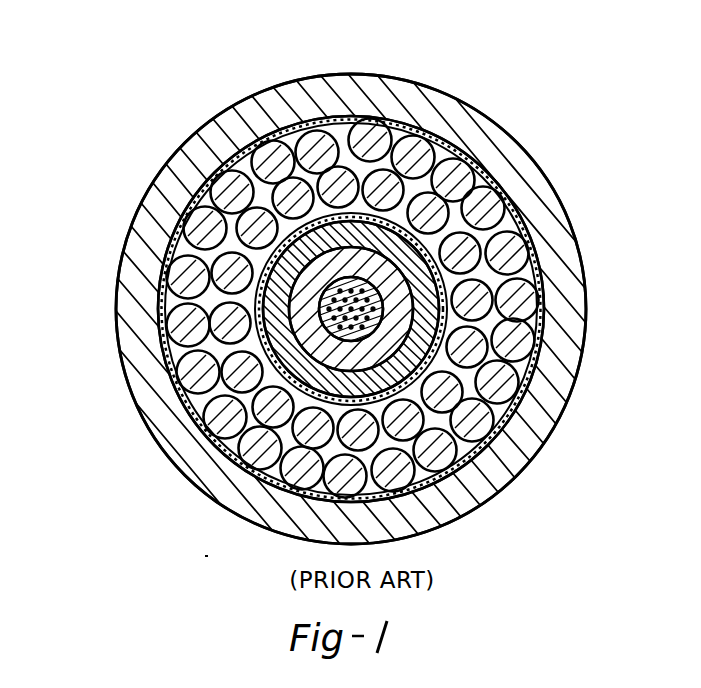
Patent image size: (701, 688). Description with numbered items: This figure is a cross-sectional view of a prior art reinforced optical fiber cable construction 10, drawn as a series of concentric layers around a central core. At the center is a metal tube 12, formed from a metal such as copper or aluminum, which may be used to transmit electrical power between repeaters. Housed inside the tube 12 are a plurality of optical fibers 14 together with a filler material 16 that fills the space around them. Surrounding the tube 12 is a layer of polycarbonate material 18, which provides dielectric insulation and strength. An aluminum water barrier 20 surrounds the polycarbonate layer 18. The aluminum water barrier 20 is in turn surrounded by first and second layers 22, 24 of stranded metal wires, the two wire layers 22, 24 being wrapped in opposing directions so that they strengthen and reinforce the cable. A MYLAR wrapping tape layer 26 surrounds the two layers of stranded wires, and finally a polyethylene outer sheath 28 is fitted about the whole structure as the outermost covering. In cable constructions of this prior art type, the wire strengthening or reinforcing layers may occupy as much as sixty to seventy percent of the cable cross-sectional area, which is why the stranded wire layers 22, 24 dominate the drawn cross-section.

The cable construction 10 is at (78, 376).
The metal tube 12 is at (402, 305).
The optical fibers 14 is at (372, 336).
The filler material 16 is at (259, 345).
The layer of polycarbonate material 18 is at (358, 228).
The aluminum water barrier 20 is at (448, 140).
The first layer of stranded metal wires 22 is at (228, 267).
The second layer of stranded metal wires 24 is at (178, 280).
The MYLAR wrapping tape layer 26 is at (520, 213).
The polyethylene outer sheath 28 is at (247, 135).